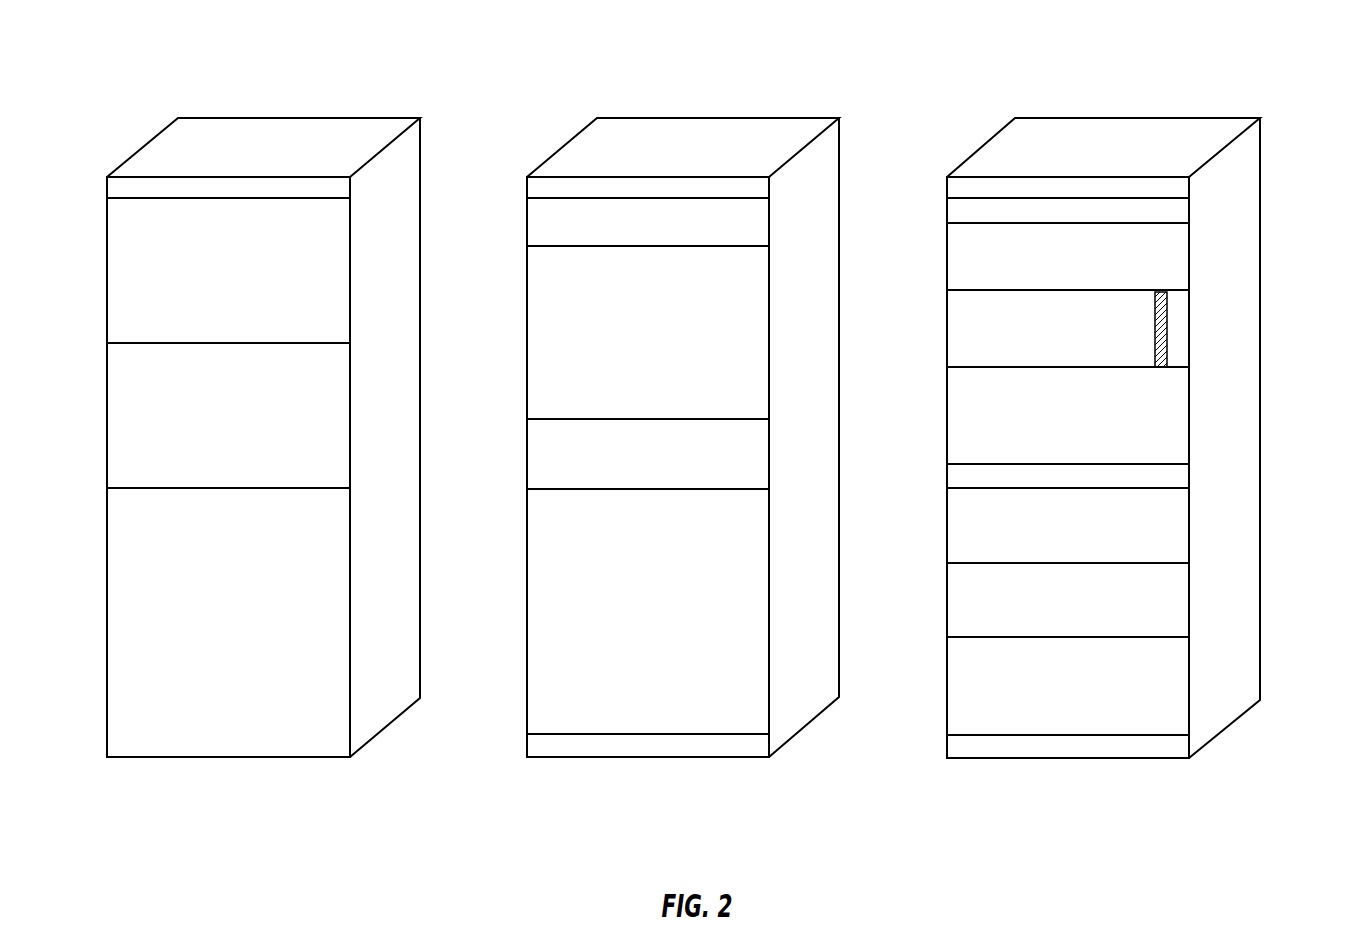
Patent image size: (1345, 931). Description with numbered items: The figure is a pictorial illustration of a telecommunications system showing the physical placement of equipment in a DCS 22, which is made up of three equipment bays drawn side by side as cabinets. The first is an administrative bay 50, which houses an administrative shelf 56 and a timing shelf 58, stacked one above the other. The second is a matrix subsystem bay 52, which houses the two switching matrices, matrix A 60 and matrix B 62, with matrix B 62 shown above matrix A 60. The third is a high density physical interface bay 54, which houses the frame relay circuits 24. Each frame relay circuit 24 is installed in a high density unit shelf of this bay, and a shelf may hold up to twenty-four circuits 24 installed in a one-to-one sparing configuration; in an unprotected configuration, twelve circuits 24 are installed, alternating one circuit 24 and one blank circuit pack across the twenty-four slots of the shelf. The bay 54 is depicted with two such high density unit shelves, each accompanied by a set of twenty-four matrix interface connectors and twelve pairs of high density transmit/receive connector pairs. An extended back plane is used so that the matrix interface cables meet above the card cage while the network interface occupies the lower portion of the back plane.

The DCS 22 is at (1251, 64).
The administrative bay 50 is at (238, 138).
The matrix subsystem bay 52 is at (780, 138).
The high density physical interface bay 54 is at (1202, 138).
The administrative shelf 56 is at (117, 273).
The timing shelf 58 is at (117, 418).
The matrix A 60 is at (538, 612).
The matrix B 62 is at (538, 338).
The frame relay circuit 24 is at (1168, 327).